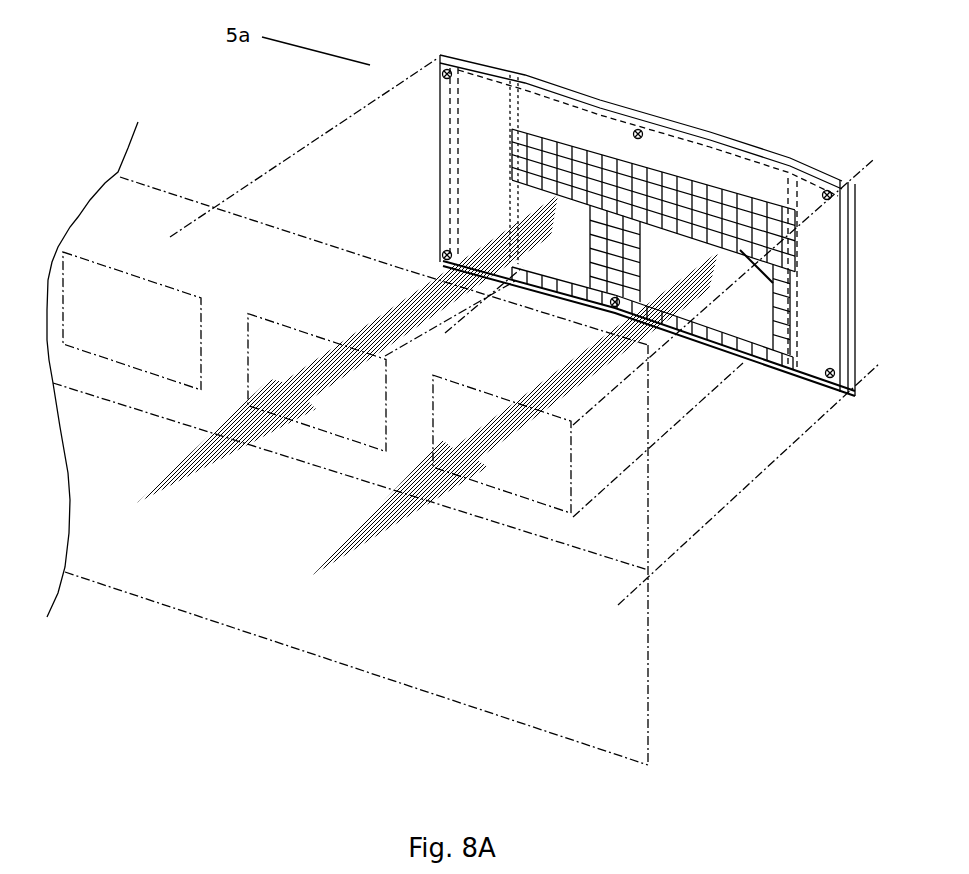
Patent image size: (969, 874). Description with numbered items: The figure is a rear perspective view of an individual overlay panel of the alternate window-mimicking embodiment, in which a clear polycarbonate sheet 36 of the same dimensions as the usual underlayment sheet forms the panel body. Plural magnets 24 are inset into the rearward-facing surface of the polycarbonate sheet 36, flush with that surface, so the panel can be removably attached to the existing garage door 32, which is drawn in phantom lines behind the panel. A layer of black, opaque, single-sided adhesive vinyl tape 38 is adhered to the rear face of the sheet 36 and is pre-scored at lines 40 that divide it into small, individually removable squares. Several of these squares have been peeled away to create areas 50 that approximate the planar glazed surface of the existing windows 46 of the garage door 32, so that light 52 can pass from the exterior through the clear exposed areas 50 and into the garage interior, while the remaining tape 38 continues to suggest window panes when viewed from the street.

The magnet 24 is at (444, 72).
The garage door 32 is at (630, 503).
The clear polycarbonate sheet 36 is at (666, 126).
The adhesive vinyl tape 38 is at (640, 184).
The lines 40 is at (540, 156).
The windows 46 is at (165, 332).
The areas 50 is at (615, 205).
The light 52 is at (243, 425).